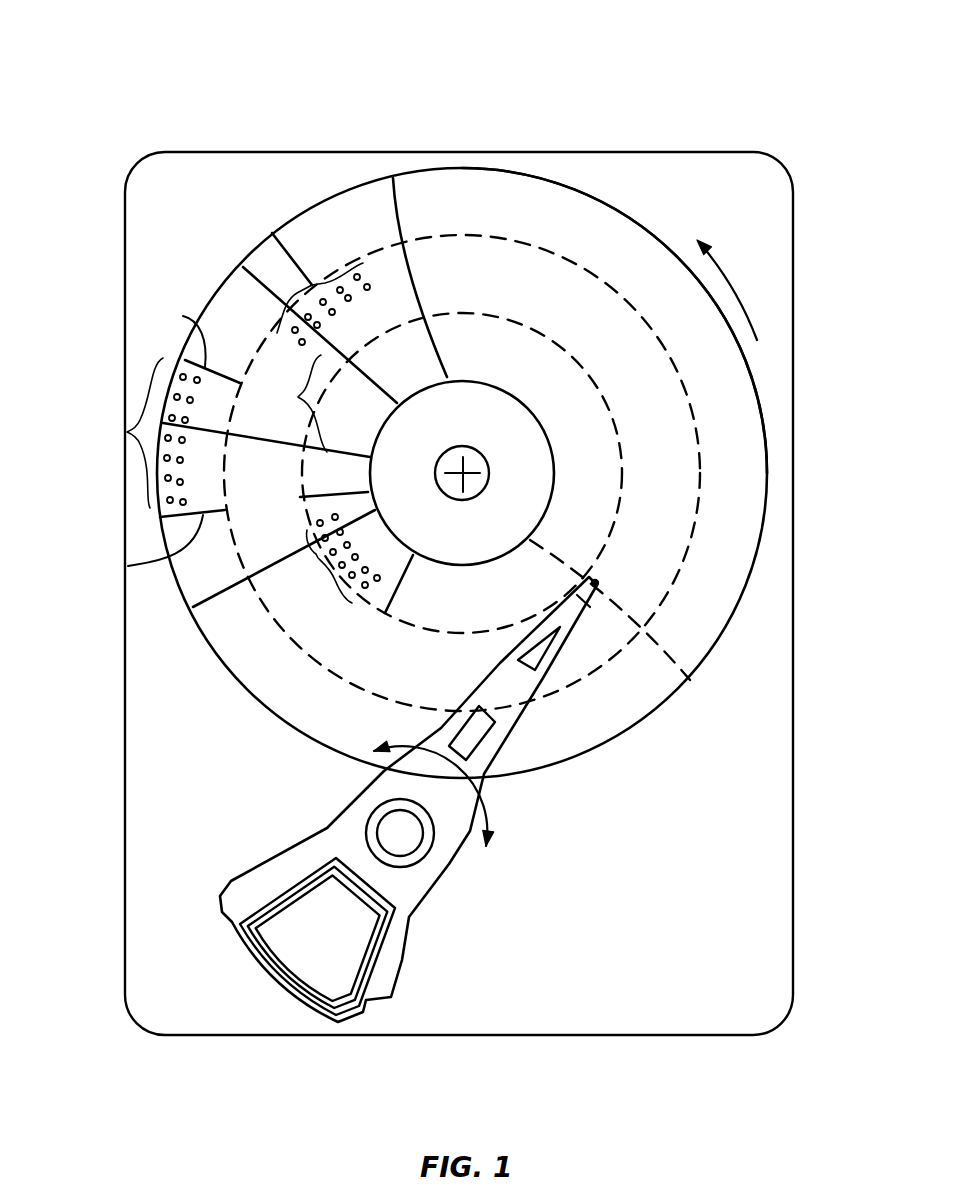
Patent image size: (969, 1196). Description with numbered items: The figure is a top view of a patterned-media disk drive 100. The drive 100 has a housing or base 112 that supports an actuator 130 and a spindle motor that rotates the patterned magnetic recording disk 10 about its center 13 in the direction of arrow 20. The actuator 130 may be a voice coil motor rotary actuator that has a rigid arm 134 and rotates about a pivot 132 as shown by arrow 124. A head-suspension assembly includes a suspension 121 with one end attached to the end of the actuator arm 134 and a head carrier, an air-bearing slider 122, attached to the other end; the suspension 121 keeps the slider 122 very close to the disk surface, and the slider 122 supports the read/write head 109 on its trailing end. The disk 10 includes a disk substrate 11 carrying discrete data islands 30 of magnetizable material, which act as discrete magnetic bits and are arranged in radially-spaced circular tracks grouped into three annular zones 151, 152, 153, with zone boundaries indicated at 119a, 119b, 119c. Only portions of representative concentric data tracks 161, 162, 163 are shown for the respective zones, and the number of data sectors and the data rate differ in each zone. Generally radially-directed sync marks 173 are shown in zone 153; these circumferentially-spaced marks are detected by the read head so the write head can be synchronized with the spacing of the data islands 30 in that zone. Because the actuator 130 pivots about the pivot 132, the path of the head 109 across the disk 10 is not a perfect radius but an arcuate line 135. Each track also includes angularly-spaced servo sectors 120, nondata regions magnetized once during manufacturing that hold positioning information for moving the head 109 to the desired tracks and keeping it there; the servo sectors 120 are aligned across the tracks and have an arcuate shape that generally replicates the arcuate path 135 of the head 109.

The patterned-media disk drive 100 is at (128, 62).
The housing or base 112 is at (715, 153).
The patterned magnetic recording disk 10 is at (318, 237).
The center 13 is at (470, 463).
The inner zone boundary 119a is at (487, 320).
The middle zone boundary 119b is at (513, 245).
The outer zone boundary 119c is at (613, 213).
The arrow 20 is at (732, 270).
The servo sectors 120 is at (403, 218).
The data track 162 is at (312, 285).
The data track 163 is at (127, 432).
The data track 161 is at (312, 567).
The sync marks 173 is at (133, 445).
The data islands 30 is at (332, 313).
The disk substrate 11 is at (753, 379).
The zone 151 is at (603, 433).
The zone 152 is at (678, 455).
The zone 153 is at (748, 472).
The air-bearing slider 122 is at (597, 590).
The arcuate line 135 is at (673, 664).
The actuator 130 is at (232, 890).
The pivot 132 is at (388, 828).
The rigid arm 134 is at (466, 706).
The suspension 121 is at (513, 667).
The read/write head 109 is at (595, 583).
The arrow 124 is at (482, 810).